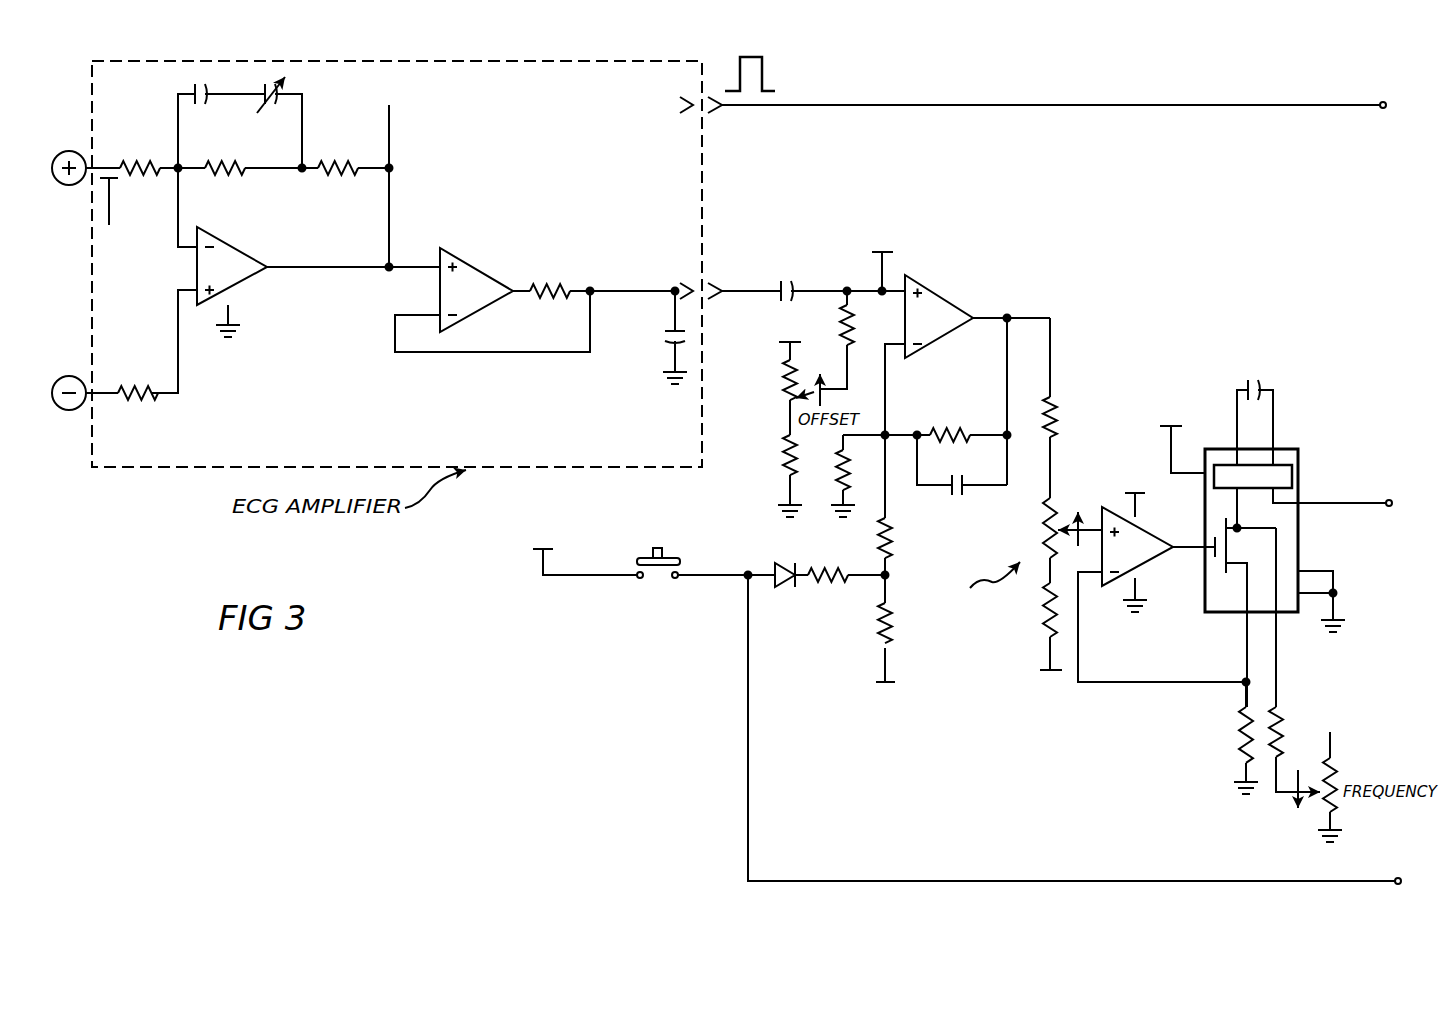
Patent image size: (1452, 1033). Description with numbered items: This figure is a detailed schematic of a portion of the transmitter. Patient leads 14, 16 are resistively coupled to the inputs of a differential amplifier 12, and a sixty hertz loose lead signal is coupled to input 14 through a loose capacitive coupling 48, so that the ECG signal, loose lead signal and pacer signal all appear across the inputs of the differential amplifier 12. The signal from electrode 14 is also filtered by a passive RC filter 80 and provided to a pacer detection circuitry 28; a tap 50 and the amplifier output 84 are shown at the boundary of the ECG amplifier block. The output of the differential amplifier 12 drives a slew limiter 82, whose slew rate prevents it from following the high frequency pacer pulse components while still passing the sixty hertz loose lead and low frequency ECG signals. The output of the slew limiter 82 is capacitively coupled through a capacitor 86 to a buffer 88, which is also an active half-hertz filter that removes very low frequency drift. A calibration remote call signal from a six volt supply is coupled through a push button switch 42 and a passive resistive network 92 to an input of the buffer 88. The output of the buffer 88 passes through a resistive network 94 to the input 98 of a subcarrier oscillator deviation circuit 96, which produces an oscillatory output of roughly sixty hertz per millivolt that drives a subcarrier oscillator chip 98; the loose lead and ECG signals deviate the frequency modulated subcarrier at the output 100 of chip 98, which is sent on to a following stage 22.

The differential amplifier 12 is at (247, 250).
The patient lead 14 is at (77, 154).
The patient lead 16 is at (77, 376).
The output to circuit 22 is at (1300, 508).
The pacer detection circuitry 28 is at (1033, 85).
The push button switch 42 is at (671, 560).
The loose capacitive coupling 48 is at (108, 166).
The tap to circuit 50 (FIG 5) 50 is at (125, 219).
The passive RC filter 80 is at (320, 130).
The slew limiter 82 is at (498, 275).
The ECG amplifier output 84 is at (675, 280).
The capacitor 86 is at (786, 266).
The buffer 88 is at (962, 288).
The passive resistive network 92 is at (894, 571).
The resistive network 94 is at (1061, 474).
The subcarrier oscillator deviation circuit 96 is at (1144, 542).
The subcarrier oscillator chip 98 is at (1297, 476).
The output of chip 100 is at (1287, 556).